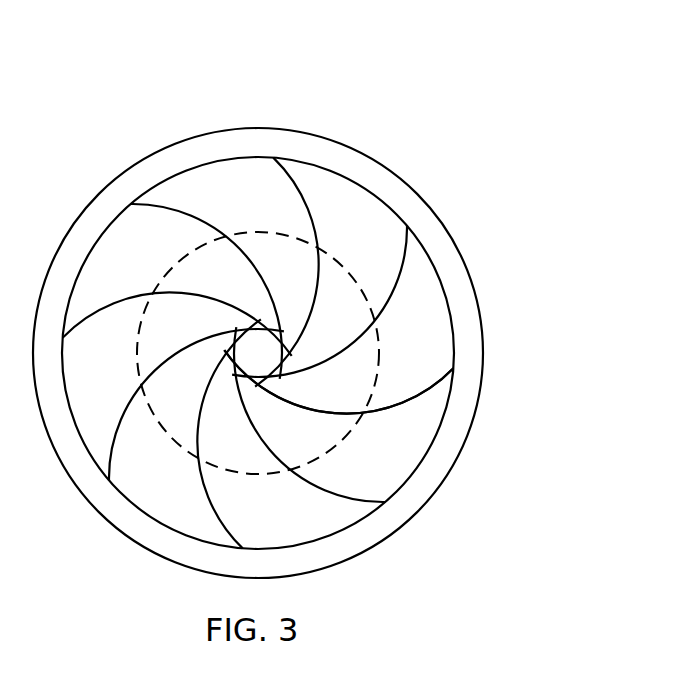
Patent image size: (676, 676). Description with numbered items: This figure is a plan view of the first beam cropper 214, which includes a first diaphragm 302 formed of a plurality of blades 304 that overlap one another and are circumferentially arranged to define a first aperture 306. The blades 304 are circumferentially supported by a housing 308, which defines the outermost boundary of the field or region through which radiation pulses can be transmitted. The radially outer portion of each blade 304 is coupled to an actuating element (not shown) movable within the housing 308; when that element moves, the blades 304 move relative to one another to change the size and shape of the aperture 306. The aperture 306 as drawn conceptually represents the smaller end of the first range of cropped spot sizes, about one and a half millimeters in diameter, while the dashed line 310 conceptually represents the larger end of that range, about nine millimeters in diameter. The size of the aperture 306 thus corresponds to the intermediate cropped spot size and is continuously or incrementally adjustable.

The first beam cropper 214 is at (173, 40).
The first diaphragm 302 is at (203, 168).
The blades 304 is at (245, 182).
The first aperture 306 is at (268, 343).
The housing 308 is at (393, 167).
The dashed line 310 is at (338, 412).